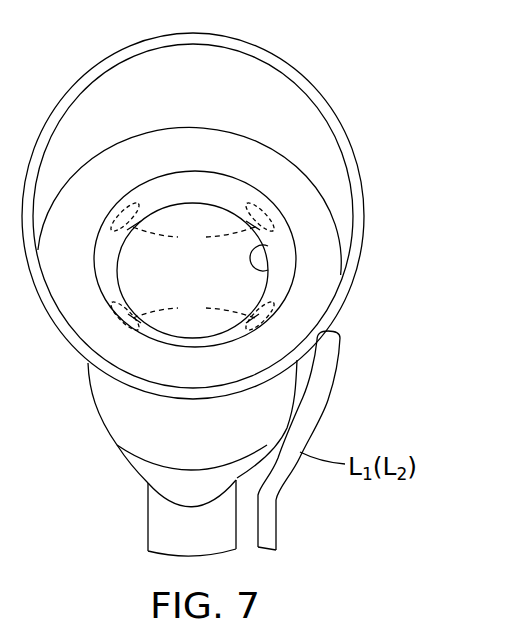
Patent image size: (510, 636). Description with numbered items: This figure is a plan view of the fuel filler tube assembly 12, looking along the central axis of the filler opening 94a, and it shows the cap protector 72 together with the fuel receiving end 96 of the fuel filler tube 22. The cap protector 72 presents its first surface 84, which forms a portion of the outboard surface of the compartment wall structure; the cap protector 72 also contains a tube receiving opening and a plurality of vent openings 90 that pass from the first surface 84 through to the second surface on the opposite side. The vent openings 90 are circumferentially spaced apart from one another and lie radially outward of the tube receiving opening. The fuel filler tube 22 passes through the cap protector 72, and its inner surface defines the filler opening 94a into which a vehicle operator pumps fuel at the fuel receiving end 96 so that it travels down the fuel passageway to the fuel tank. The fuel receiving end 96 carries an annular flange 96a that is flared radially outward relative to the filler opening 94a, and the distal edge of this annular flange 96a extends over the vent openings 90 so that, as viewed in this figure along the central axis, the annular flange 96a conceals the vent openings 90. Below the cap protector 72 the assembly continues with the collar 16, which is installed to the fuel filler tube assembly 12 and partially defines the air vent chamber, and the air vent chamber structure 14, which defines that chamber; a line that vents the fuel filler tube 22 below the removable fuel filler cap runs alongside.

The fuel filler tube assembly 12 is at (392, 143).
The cap protector 72 is at (303, 77).
The first surface 84 is at (90, 126).
The fuel receiving end 96 is at (200, 347).
The vent openings 90 is at (193, 273).
The filler opening 94a is at (272, 246).
The annular flange 96a is at (280, 288).
The collar 16 is at (122, 409).
The fuel filler tube 22 is at (172, 522).
The air vent chamber structure 14 is at (302, 398).